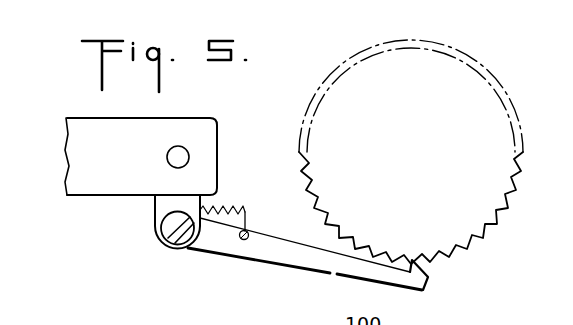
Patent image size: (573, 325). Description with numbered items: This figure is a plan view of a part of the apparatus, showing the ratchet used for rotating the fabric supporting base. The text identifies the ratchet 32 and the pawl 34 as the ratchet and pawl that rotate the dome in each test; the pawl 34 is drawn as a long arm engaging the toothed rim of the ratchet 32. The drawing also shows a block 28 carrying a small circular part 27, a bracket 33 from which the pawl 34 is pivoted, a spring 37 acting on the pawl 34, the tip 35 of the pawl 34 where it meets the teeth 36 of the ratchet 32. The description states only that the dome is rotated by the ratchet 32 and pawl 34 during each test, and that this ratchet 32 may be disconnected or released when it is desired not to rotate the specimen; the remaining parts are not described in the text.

The screw 27 is at (167, 157).
The housing block 28 is at (87, 169).
The ratchet 32 is at (424, 152).
The bracket 33 is at (168, 202).
The pawl 34 is at (217, 248).
The pawl tip 35 is at (425, 280).
The ratchet teeth 36 is at (468, 250).
The spring 37 is at (217, 208).